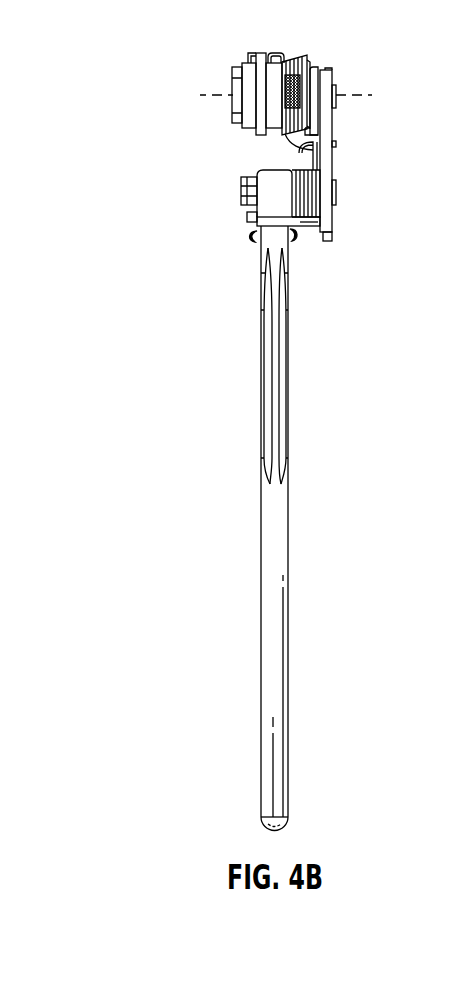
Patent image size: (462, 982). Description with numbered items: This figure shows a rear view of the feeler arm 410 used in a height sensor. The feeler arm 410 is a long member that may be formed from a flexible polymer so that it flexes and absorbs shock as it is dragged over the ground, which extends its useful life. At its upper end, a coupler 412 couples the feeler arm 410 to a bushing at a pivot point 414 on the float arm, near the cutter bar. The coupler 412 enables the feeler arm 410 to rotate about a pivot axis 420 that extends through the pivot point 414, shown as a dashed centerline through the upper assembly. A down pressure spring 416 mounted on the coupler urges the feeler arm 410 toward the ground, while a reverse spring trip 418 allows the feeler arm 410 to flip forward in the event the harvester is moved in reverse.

The feeler arm 410 is at (261, 516).
The coupler 412 is at (337, 137).
The pivot point 414 is at (315, 68).
The down pressure spring 416 is at (284, 60).
The reverse spring trip 418 is at (325, 242).
The pivot axis 420 is at (197, 96).